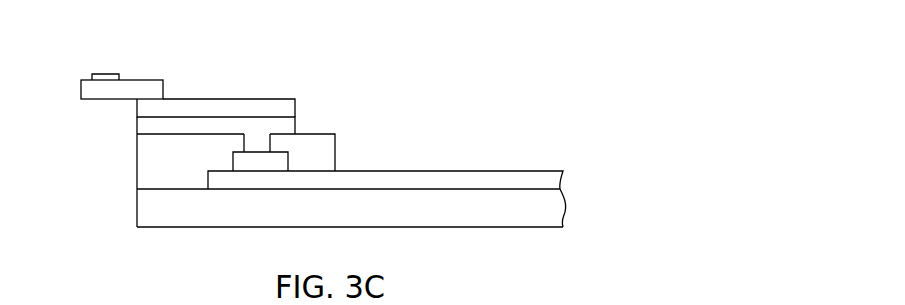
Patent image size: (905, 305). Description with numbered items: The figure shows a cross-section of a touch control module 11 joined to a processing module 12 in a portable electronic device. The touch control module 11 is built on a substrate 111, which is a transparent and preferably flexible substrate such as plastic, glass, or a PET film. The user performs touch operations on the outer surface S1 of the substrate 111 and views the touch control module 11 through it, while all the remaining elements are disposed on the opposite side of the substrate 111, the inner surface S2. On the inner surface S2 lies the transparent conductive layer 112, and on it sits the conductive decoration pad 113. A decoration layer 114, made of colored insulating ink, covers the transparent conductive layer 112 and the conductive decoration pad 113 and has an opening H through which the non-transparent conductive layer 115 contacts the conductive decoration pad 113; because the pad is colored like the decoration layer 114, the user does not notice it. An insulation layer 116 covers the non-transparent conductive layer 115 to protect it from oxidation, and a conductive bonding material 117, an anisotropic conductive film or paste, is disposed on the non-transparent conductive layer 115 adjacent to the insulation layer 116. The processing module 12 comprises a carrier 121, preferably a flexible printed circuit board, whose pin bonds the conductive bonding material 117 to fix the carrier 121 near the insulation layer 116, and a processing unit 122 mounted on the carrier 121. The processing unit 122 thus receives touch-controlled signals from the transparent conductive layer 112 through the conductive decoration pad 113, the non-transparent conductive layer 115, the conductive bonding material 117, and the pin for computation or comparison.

The touch control module 11 is at (389, 92).
The processing module 12 is at (149, 65).
The carrier 121 is at (130, 88).
The processing unit 122 is at (98, 73).
The substrate 111 is at (147, 212).
The transparent conductive layer 112 is at (464, 178).
The conductive decoration pad 113 is at (253, 163).
The decoration layer 114 is at (149, 150).
The non-transparent conductive layer 115 is at (149, 126).
The insulation layer 116 is at (278, 106).
The conductive bonding material 117 is at (157, 110).
The opening H is at (258, 145).
The outer surface S1 is at (147, 226).
The inner surface S2 is at (147, 188).